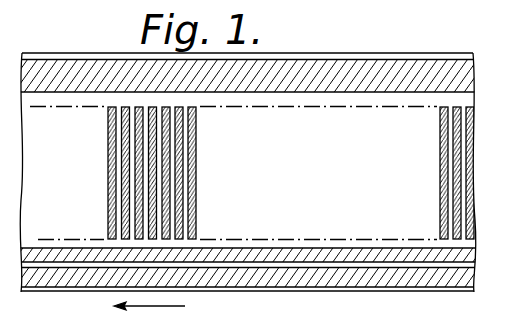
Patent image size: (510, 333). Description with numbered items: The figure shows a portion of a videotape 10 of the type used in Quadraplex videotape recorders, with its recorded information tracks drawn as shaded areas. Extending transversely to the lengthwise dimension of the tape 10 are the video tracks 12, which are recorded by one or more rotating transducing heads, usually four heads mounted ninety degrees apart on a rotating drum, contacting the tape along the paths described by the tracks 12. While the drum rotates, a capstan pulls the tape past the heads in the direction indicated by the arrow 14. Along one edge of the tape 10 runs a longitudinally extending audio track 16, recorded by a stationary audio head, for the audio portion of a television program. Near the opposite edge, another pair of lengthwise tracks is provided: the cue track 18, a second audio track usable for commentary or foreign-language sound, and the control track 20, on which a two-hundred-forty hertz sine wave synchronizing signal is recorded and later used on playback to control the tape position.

The videotape 10 is at (250, 173).
The video tracks 12 is at (196, 147).
The arrow 14 is at (150, 307).
The audio track 16 is at (92, 64).
The cue track 18 is at (58, 252).
The control track 20 is at (337, 284).